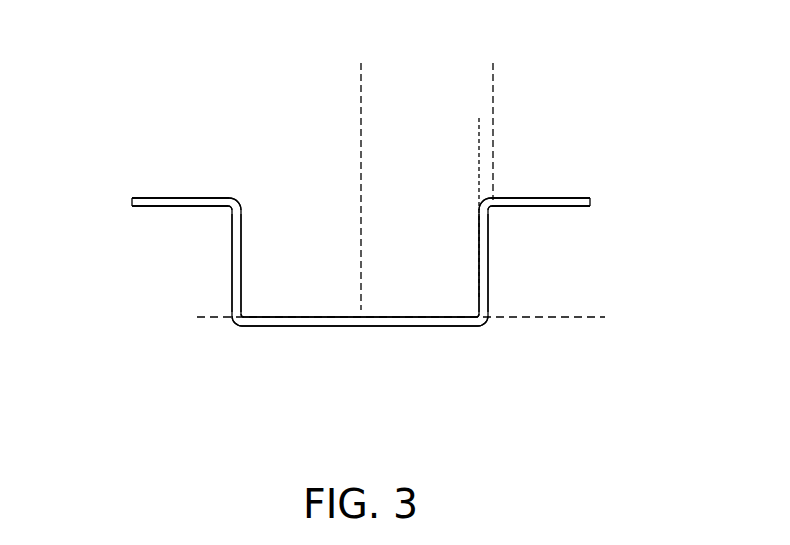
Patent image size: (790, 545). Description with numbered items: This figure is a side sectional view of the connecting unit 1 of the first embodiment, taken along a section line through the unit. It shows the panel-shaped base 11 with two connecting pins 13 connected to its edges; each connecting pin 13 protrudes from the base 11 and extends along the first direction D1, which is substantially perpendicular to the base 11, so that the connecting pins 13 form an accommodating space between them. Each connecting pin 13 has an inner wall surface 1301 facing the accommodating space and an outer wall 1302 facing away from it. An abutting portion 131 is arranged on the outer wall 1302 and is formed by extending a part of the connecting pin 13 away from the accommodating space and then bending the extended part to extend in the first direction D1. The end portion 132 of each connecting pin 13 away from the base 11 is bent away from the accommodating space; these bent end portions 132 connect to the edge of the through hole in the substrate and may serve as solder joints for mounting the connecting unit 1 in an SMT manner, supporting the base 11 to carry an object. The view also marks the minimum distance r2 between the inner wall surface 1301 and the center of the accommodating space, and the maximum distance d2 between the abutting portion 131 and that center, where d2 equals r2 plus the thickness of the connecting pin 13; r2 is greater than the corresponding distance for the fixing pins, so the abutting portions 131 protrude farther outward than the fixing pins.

The connecting unit 1 is at (133, 98).
The base 11 is at (328, 320).
The connecting pin 13 is at (132, 203).
The abutting portion 131 is at (235, 240).
The end portion 132 is at (198, 202).
The inner wall surface 1301 is at (242, 294).
The outer wall 1302 is at (232, 295).
The maximum distance between the abutting portion and the center of the accommodatin d2 is at (493, 73).
The minimum distance between the inner wall surface and the center of the accommodat r2 is at (479, 129).
The first direction D1 is at (663, 120).